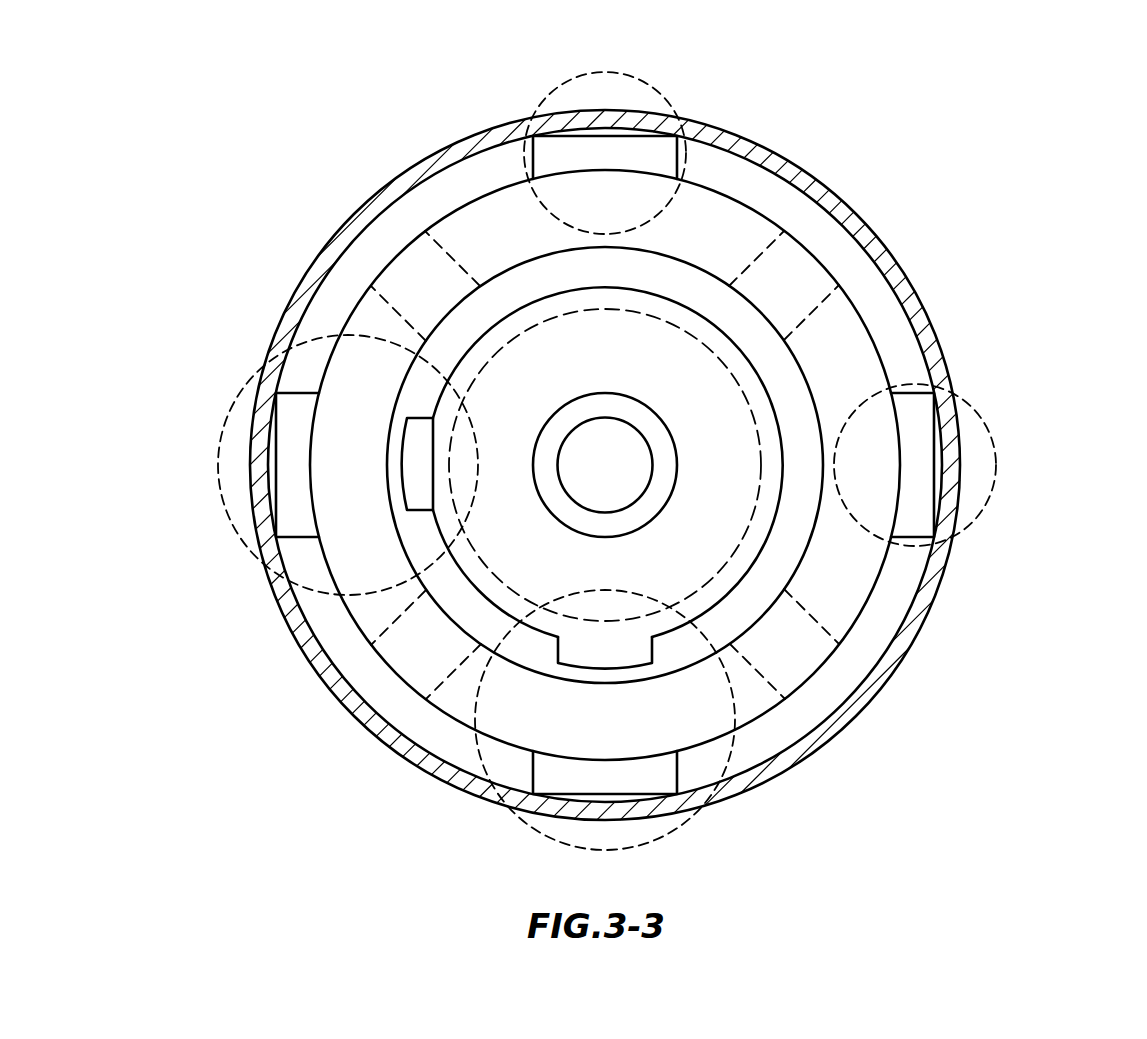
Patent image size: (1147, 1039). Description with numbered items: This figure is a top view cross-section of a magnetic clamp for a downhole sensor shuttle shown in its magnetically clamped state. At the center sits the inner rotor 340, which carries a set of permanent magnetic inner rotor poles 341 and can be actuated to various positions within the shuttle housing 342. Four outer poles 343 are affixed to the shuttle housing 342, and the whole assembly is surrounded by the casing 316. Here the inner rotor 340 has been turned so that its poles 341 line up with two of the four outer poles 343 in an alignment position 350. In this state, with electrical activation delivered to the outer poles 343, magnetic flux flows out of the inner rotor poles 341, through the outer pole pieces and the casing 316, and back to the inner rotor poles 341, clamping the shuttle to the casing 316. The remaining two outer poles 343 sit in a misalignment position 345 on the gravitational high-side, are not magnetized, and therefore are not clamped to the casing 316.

The casing 316 is at (895, 672).
The inner rotor 340 is at (488, 325).
The inner rotor pole 341 is at (410, 512).
The shuttle housing 342 is at (353, 622).
The outer pole 343 is at (560, 155).
The misalignment position 345 is at (640, 78).
The alignment position 350 is at (233, 403).